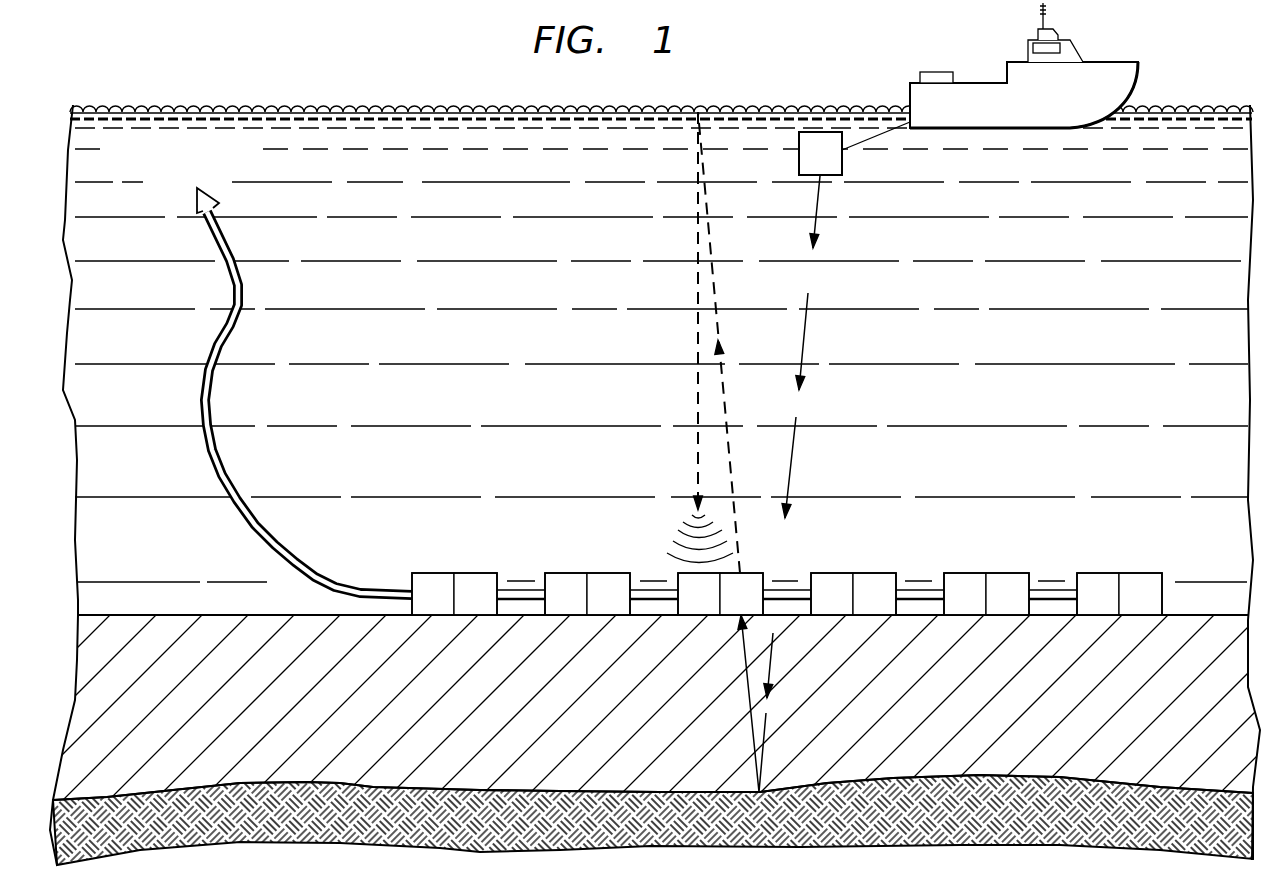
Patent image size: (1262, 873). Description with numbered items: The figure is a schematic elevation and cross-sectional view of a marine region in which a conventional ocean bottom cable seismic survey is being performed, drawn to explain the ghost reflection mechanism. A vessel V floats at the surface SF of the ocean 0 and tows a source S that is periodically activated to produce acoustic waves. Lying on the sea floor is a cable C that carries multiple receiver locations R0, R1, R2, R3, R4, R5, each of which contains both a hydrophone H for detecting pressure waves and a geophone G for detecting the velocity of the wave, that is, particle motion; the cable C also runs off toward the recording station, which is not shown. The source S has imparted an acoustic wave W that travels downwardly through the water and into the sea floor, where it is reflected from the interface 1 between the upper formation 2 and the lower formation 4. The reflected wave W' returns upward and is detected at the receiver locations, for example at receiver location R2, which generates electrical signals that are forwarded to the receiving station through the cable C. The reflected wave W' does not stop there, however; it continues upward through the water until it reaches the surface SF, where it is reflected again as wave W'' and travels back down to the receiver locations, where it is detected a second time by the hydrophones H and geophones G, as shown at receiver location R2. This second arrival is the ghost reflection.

The vessel V is at (1120, 60).
The surface SF is at (1203, 105).
The source S is at (820, 190).
The acoustic wave W is at (816, 405).
The reflected wave W' is at (736, 703).
The reflected wave (ghost) W'' is at (684, 342).
The cable C is at (208, 462).
The ocean 0 is at (1094, 347).
The formation 2 is at (1094, 716).
The formation 4 is at (1094, 824).
The interface 1 is at (932, 777).
The hydrophone H is at (765, 594).
The geophone G is at (808, 594).
The receiver location R0 is at (432, 572).
The receiver location R1 is at (565, 572).
The receiver location R2 is at (748, 572).
The receiver location R3 is at (875, 572).
The receiver location R4 is at (1007, 572).
The receiver location R5 is at (1143, 572).